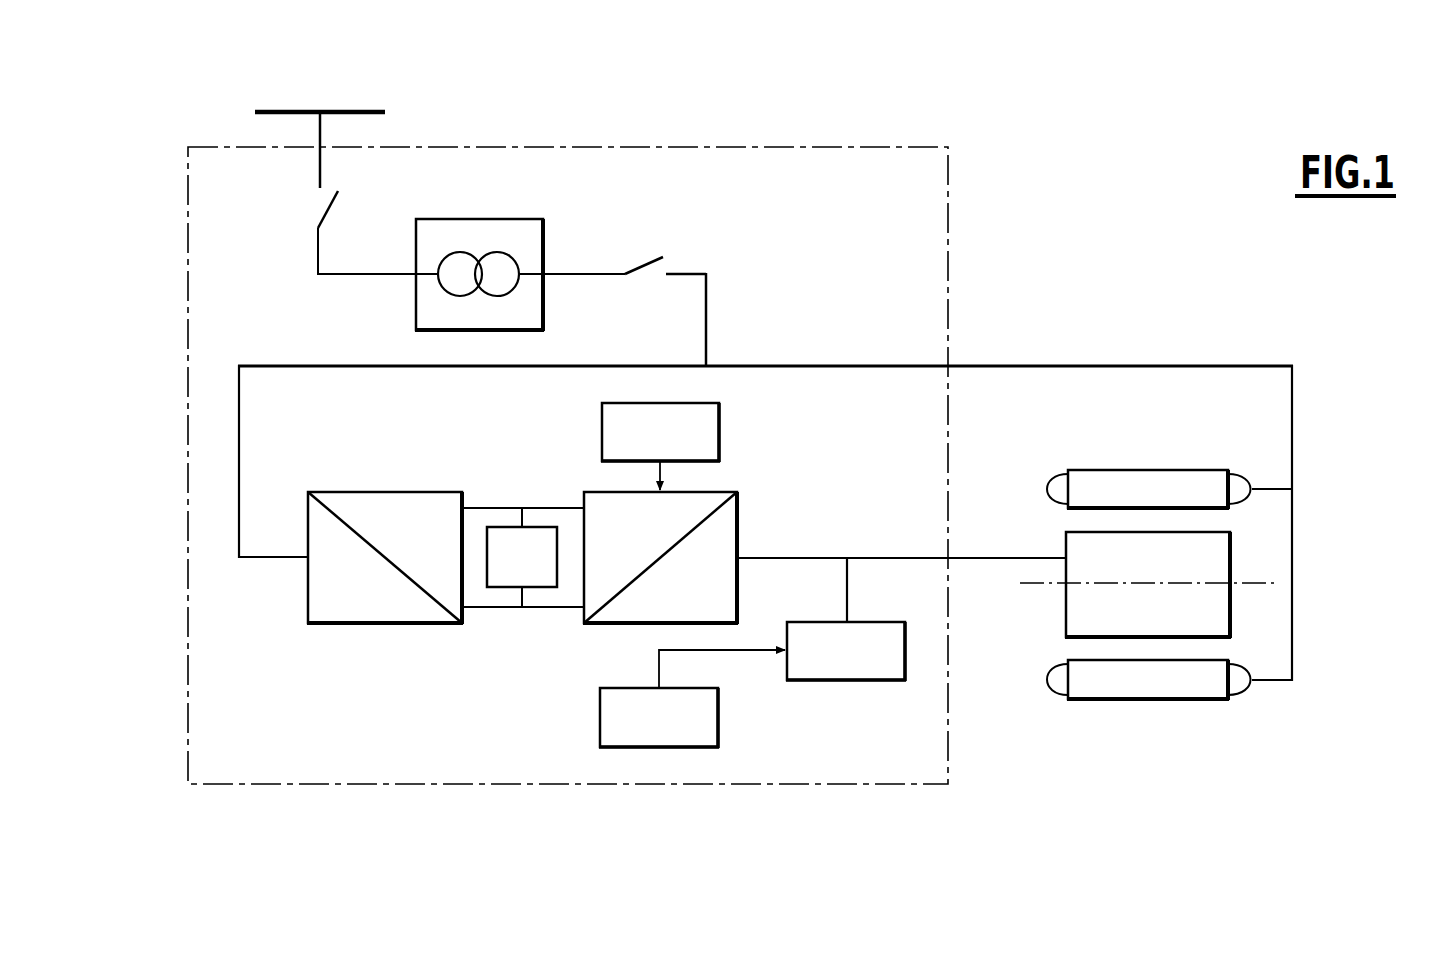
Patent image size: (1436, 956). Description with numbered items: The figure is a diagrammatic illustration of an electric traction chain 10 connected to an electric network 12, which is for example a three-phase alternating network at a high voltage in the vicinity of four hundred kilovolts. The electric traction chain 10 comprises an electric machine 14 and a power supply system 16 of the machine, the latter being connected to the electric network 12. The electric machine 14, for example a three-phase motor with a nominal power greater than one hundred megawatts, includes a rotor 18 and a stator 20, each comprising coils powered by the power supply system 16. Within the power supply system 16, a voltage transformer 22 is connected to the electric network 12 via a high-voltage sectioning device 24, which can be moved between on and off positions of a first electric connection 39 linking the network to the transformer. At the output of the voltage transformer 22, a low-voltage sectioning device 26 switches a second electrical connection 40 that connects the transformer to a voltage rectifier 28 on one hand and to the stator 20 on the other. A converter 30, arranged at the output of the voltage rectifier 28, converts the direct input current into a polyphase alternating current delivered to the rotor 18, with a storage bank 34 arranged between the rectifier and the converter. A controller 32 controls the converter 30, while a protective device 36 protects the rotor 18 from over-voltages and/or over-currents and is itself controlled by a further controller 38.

The electric traction chain 10 is at (1142, 260).
The electric network 12 is at (362, 110).
The electric machine 14 is at (1310, 438).
The power supply system 16 is at (948, 223).
The rotor 18 is at (1066, 612).
The stator 20 is at (1147, 485).
The voltage transformer 22 is at (502, 219).
The high-voltage sectioning device 24 is at (332, 211).
The low-voltage sectioning device 26 is at (643, 265).
The voltage rectifier 28 is at (384, 492).
The converter 30 is at (737, 518).
The controller 32 is at (719, 430).
The storage bank 34 is at (547, 527).
The protective device 36 is at (873, 622).
The controller 38 is at (718, 716).
The first electric connection 39 is at (357, 275).
The second electrical connection 40 is at (706, 310).